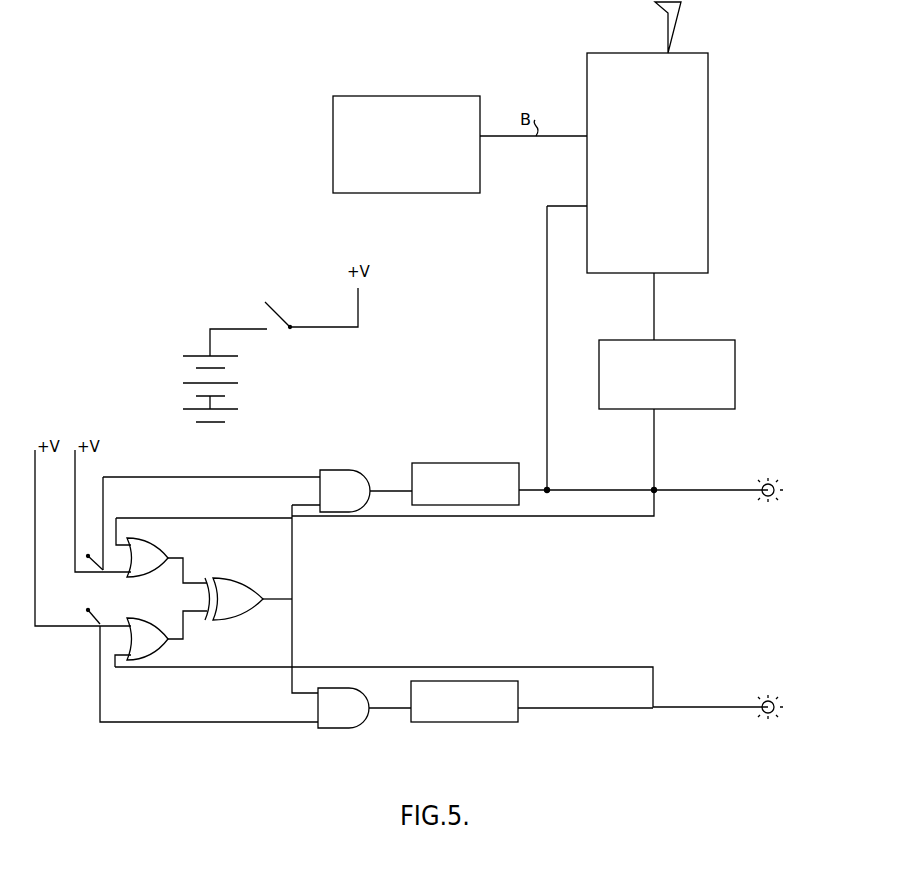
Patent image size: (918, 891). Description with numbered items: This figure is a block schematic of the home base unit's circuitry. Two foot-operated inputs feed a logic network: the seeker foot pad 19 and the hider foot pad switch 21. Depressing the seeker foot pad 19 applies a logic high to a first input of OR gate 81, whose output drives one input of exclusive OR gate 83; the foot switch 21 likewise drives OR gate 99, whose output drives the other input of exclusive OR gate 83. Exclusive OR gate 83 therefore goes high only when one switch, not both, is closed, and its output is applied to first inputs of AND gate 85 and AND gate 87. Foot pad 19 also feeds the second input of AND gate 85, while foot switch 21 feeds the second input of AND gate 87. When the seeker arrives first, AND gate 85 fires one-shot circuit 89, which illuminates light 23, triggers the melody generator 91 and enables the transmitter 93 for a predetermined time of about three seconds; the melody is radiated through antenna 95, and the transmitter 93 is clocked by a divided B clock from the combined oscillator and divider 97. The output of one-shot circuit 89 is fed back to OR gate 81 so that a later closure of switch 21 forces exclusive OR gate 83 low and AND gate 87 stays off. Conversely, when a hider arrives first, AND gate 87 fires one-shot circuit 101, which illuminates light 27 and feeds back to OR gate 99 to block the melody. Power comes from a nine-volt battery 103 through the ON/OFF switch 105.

The seeker foot pad 19 is at (99, 568).
The foot pad switch 21 is at (95, 624).
The light 23 is at (761, 500).
The light 27 is at (760, 716).
The OR gate 81 is at (160, 550).
The exclusive OR gate 83 is at (228, 578).
The AND gate 85 is at (340, 470).
The AND gate 87 is at (348, 728).
The one-shot circuit 89 is at (474, 452).
The melody generator 91 is at (712, 340).
The transmitter 93 is at (708, 145).
The antenna 95 is at (670, 32).
The combined oscillator and divider 97 is at (424, 86).
The OR gate 99 is at (152, 651).
The one-shot circuit 101 is at (490, 722).
The battery 103 is at (197, 350).
The ON/OFF switch 105 is at (287, 322).